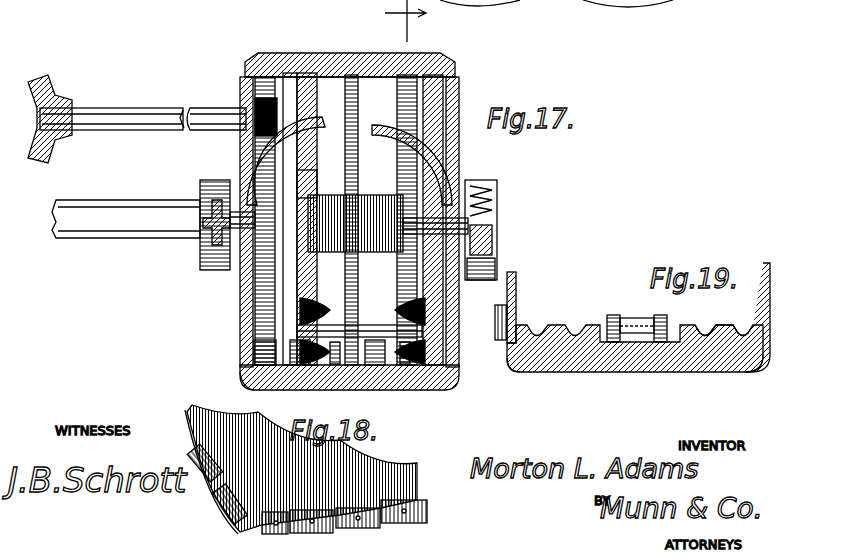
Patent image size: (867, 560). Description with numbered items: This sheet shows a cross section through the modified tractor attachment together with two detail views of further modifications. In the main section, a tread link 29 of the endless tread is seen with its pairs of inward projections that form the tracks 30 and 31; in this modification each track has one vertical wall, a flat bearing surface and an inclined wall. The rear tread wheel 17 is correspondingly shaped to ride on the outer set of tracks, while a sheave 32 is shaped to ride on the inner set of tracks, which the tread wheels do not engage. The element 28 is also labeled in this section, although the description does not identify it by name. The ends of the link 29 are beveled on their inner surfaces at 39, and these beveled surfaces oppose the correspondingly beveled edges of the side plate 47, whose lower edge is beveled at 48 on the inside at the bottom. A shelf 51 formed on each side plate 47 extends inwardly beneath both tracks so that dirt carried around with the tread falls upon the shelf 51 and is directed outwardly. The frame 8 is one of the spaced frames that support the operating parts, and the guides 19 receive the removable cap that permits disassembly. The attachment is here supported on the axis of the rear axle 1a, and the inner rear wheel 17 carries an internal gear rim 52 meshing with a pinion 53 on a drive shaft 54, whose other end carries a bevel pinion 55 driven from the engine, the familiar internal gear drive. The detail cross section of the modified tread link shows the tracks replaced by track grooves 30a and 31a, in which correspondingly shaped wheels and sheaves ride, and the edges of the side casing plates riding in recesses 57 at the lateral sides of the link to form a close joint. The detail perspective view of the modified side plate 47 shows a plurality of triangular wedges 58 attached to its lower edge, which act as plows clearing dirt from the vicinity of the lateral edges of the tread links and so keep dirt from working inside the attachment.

In FIG. 17, the rear axle 1a is at (138, 202).
In FIG. 17, the frame 8 is at (410, 176).
In FIG. 17, the rear tread wheel 17 is at (256, 89).
In FIG. 17, the guide 19 is at (307, 176).
In FIG. 17, the central gear column 28 is at (338, 220).
In FIG. 17, the tread link 29 is at (386, 390).
In FIG. 17, the inward projection 30 is at (305, 78).
In FIG. 19, the track groove 30a is at (540, 328).
In FIG. 17, the inward projection 31 is at (410, 75).
In FIG. 19, the track groove 31a is at (712, 322).
In FIG. 17, the sheave 32 is at (360, 8).
In FIG. 17, the beveled surface 39 is at (243, 380).
In FIG. 17, the side plate 47 is at (244, 310).
In FIG. 19, the side plate 47 is at (514, 288).
In FIG. 18, the side plate 47 is at (372, 474).
In FIG. 17, the beveled lower edge 48 is at (238, 372).
In FIG. 17, the shelf 51 is at (250, 158).
In FIG. 17, the internal gear rim 52 is at (228, 90).
In FIG. 17, the pinion 53 is at (250, 126).
In FIG. 17, the drive shaft 54 is at (108, 115).
In FIG. 17, the bevel pinion 55 is at (48, 90).
In FIG. 19, the recess 57 is at (510, 360).
In FIG. 19, the wedge 58 is at (503, 340).
In FIG. 18, the wedge 58 is at (368, 522).